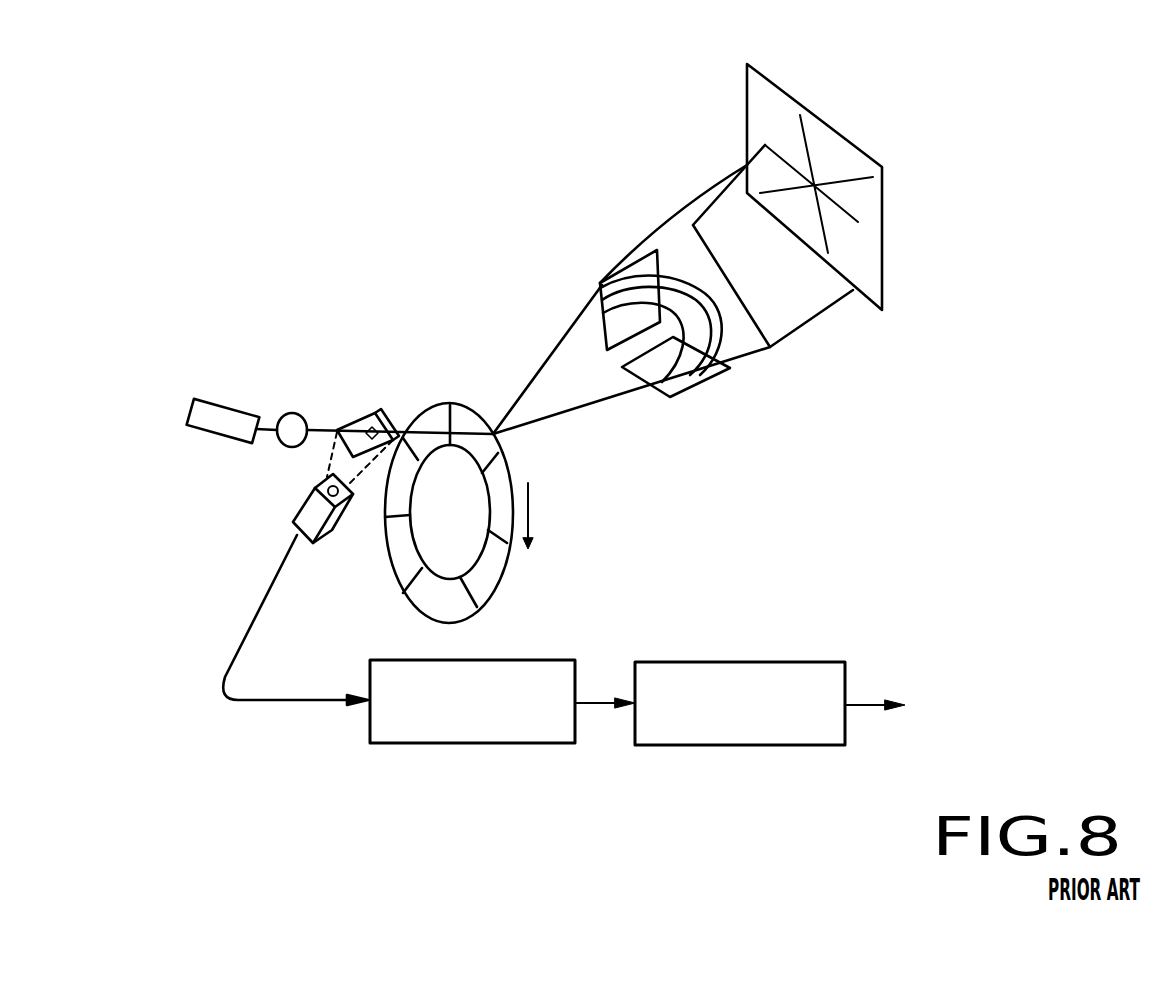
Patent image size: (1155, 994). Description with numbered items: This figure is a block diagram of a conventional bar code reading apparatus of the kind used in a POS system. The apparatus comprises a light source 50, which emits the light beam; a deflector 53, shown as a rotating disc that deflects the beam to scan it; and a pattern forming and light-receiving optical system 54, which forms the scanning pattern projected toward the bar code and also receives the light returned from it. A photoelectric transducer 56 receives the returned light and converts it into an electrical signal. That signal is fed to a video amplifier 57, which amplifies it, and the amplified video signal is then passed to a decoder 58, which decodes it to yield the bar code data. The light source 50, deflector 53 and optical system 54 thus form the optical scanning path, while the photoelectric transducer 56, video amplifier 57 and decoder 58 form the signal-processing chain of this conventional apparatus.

The light source 50 is at (213, 398).
The deflector 53 is at (432, 405).
The pattern forming and light-receiving optical system 54 is at (688, 398).
The photoelectric transducer 56 is at (295, 512).
The video amplifier 57 is at (388, 745).
The decoder 58 is at (818, 660).